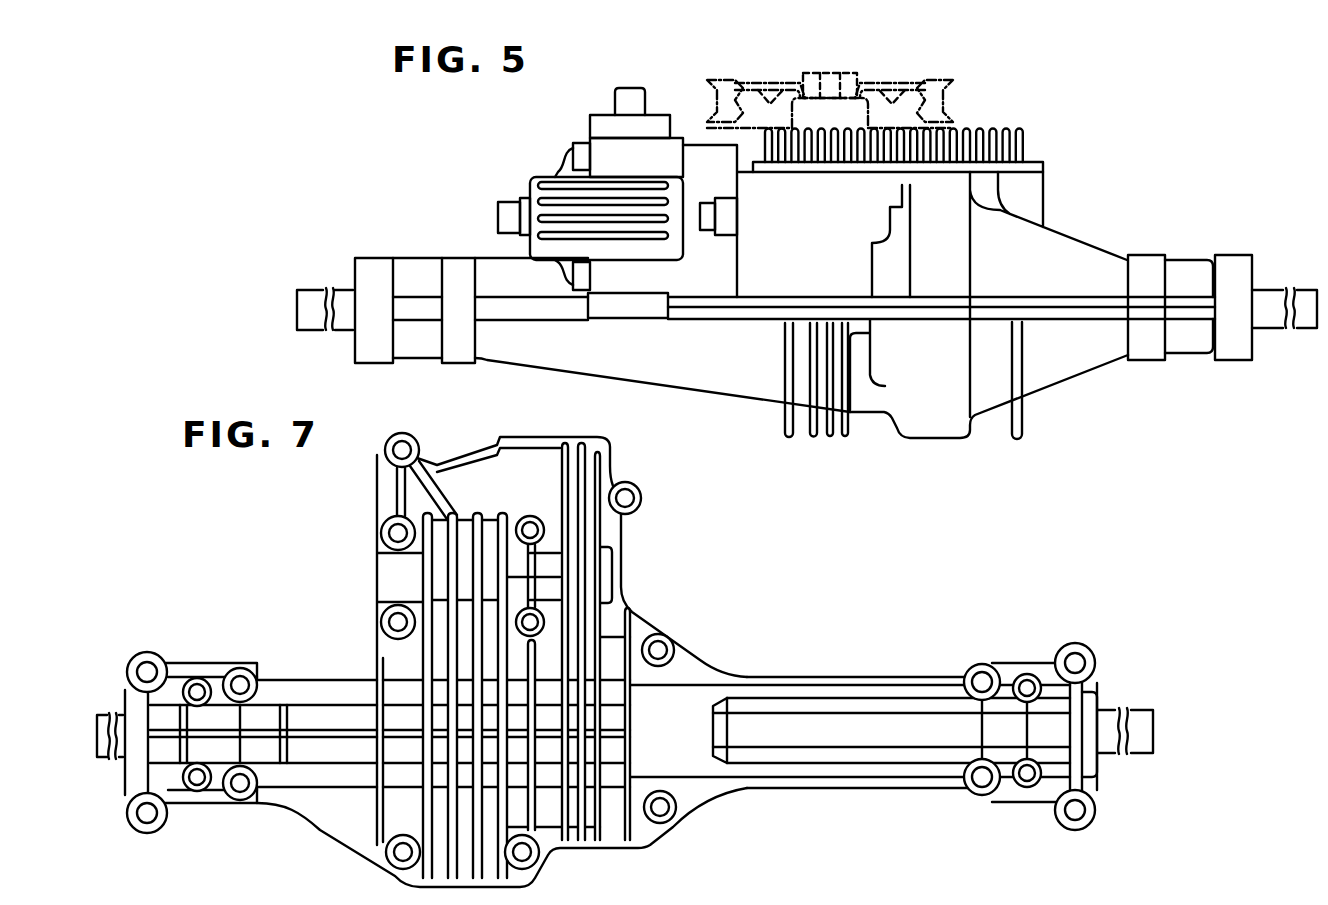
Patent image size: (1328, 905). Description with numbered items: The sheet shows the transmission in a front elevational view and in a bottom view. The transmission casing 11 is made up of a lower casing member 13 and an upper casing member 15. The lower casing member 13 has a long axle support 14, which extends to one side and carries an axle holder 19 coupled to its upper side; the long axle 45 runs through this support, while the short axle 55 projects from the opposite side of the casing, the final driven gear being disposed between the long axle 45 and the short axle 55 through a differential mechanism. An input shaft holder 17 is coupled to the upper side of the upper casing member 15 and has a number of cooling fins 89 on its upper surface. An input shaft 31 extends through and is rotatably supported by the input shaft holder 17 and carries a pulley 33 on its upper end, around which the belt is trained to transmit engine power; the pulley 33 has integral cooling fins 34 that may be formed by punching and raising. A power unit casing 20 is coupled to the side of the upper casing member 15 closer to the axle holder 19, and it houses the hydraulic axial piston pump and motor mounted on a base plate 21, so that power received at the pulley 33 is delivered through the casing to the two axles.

In FIG. 5, the transmission casing 11 is at (1147, 196).
In FIG. 5, the lower casing member 13 is at (1042, 384).
In FIG. 7, the lower casing member 13 is at (645, 640).
In FIG. 5, the long axle support 14 is at (417, 345).
In FIG. 7, the long axle support 14 is at (897, 772).
In FIG. 5, the upper casing member 15 is at (1045, 208).
In FIG. 5, the input shaft holder 17 is at (1028, 167).
In FIG. 5, the axle holder 19 is at (411, 268).
In FIG. 5, the power unit casing 20 is at (568, 178).
In FIG. 5, the base plate 21 is at (706, 155).
In FIG. 5, the input shaft 31 is at (847, 77).
In FIG. 5, the pulley 33 is at (955, 86).
In FIG. 5, the cooling fins 34 is at (886, 95).
In FIG. 5, the long axle 45 is at (338, 332).
In FIG. 7, the long axle 45 is at (1137, 753).
In FIG. 5, the short axle 55 is at (1275, 331).
In FIG. 7, the short axle 55 is at (123, 714).
In FIG. 5, the cooling fins 89 is at (995, 132).